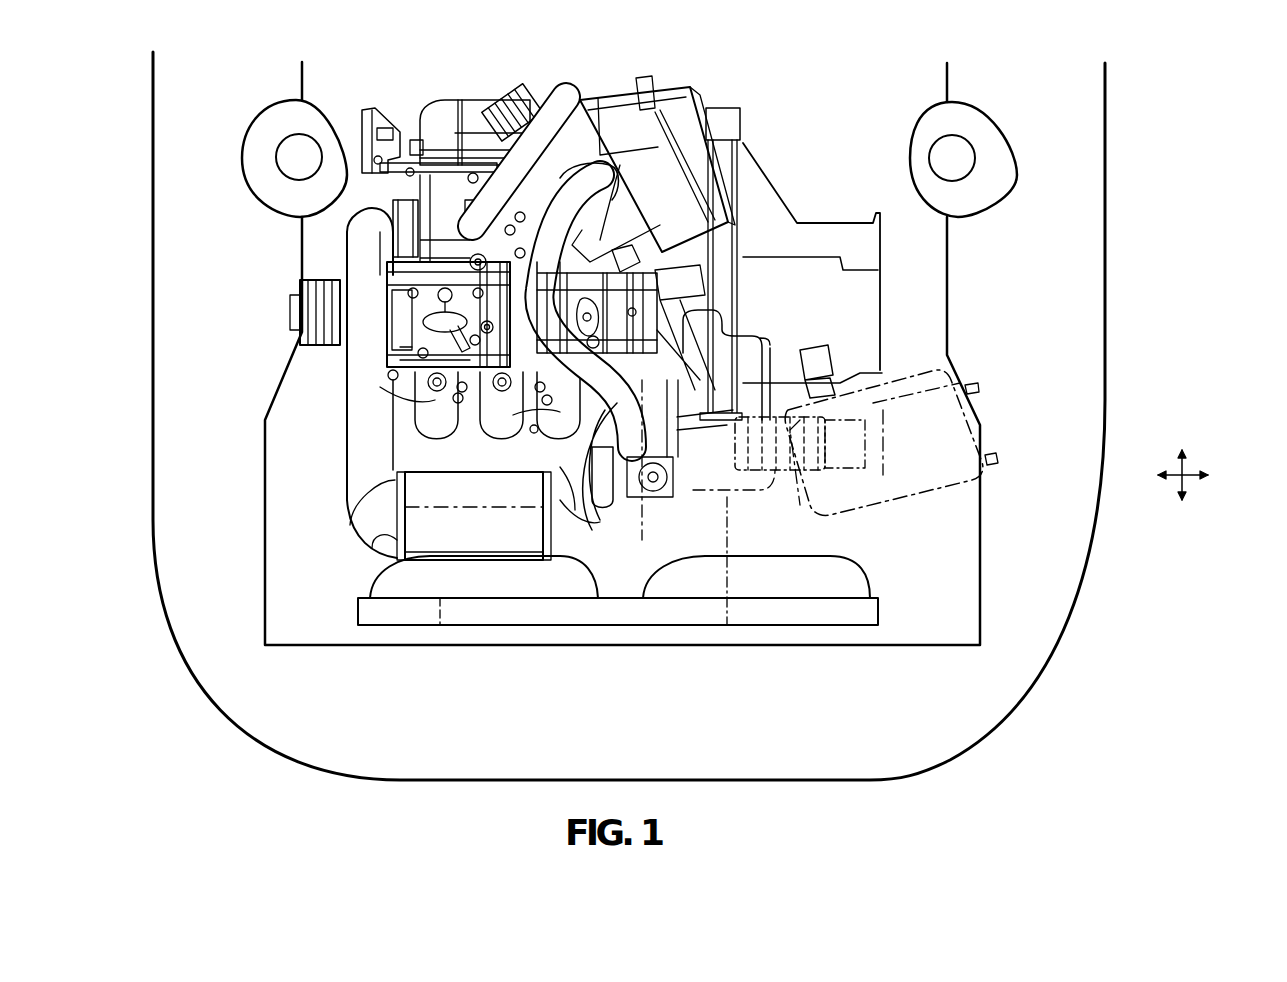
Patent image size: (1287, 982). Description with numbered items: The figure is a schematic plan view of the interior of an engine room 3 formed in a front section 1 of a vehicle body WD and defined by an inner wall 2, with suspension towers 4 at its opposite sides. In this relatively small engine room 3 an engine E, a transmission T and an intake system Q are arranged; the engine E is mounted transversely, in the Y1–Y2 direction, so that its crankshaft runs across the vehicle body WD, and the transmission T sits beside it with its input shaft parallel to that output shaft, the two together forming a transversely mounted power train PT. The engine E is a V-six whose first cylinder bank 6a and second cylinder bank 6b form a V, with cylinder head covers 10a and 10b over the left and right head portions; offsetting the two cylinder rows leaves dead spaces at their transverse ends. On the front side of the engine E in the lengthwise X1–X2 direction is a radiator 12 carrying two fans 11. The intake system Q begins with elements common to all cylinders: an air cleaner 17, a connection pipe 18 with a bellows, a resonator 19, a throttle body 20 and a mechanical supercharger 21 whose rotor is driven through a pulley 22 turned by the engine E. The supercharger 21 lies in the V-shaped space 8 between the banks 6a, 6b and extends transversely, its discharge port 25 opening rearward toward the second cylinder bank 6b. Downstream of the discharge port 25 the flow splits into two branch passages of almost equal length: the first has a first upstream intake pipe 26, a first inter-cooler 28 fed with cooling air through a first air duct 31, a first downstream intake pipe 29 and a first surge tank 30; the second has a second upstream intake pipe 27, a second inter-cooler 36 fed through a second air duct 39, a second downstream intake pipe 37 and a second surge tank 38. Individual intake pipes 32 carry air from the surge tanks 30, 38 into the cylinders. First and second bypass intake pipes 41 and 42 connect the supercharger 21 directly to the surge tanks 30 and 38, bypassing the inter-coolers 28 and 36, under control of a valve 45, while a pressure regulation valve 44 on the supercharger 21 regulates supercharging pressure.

The front section 1 is at (1105, 328).
The inner wall 2 is at (950, 318).
The engine room 3 is at (845, 126).
The suspension tower 4 is at (248, 157).
The first cylinder bank 6a is at (392, 458).
The second cylinder bank 6b is at (392, 188).
The V-shaped space 8 is at (405, 358).
The cylinder head cover 10a is at (400, 418).
The cylinder head cover 10b is at (476, 258).
The fan 11 is at (437, 583).
The radiator 12 is at (603, 625).
The air cleaner 17 is at (915, 362).
The connection pipe 18 is at (775, 482).
The resonator 19 is at (776, 330).
The throttle body 20 is at (632, 290).
The mechanical supercharger 21 is at (427, 320).
The pulley 22 is at (300, 292).
The discharge port 25 is at (470, 200).
The first upstream intake pipe 26 is at (352, 405).
The second upstream intake pipe 27 is at (532, 175).
The first inter-cooler 28 is at (395, 540).
The first downstream intake pipe 29 is at (605, 503).
The first surge tank 30 is at (515, 465).
The first air duct 31 is at (490, 617).
The individual intake pipe 32 is at (438, 428).
The second inter-cooler 36 is at (692, 113).
The second downstream intake pipe 37 is at (602, 262).
The second surge tank 38 is at (545, 203).
The second air duct 39 is at (705, 605).
The first bypass intake pipe 41 is at (612, 495).
The second bypass intake pipe 42 is at (600, 224).
The pressure regulation valve 44 is at (614, 258).
The valve 45 is at (505, 250).
The engine E is at (303, 443).
The transmission T is at (752, 156).
The power train PT is at (810, 216).
The intake system Q is at (885, 540).
The vehicle body WD is at (1115, 575).
The lengthwise direction X1 is at (1183, 504).
The lengthwise direction X2 is at (1185, 421).
The transverse direction Y1 is at (1127, 479).
The transverse direction Y2 is at (1235, 479).